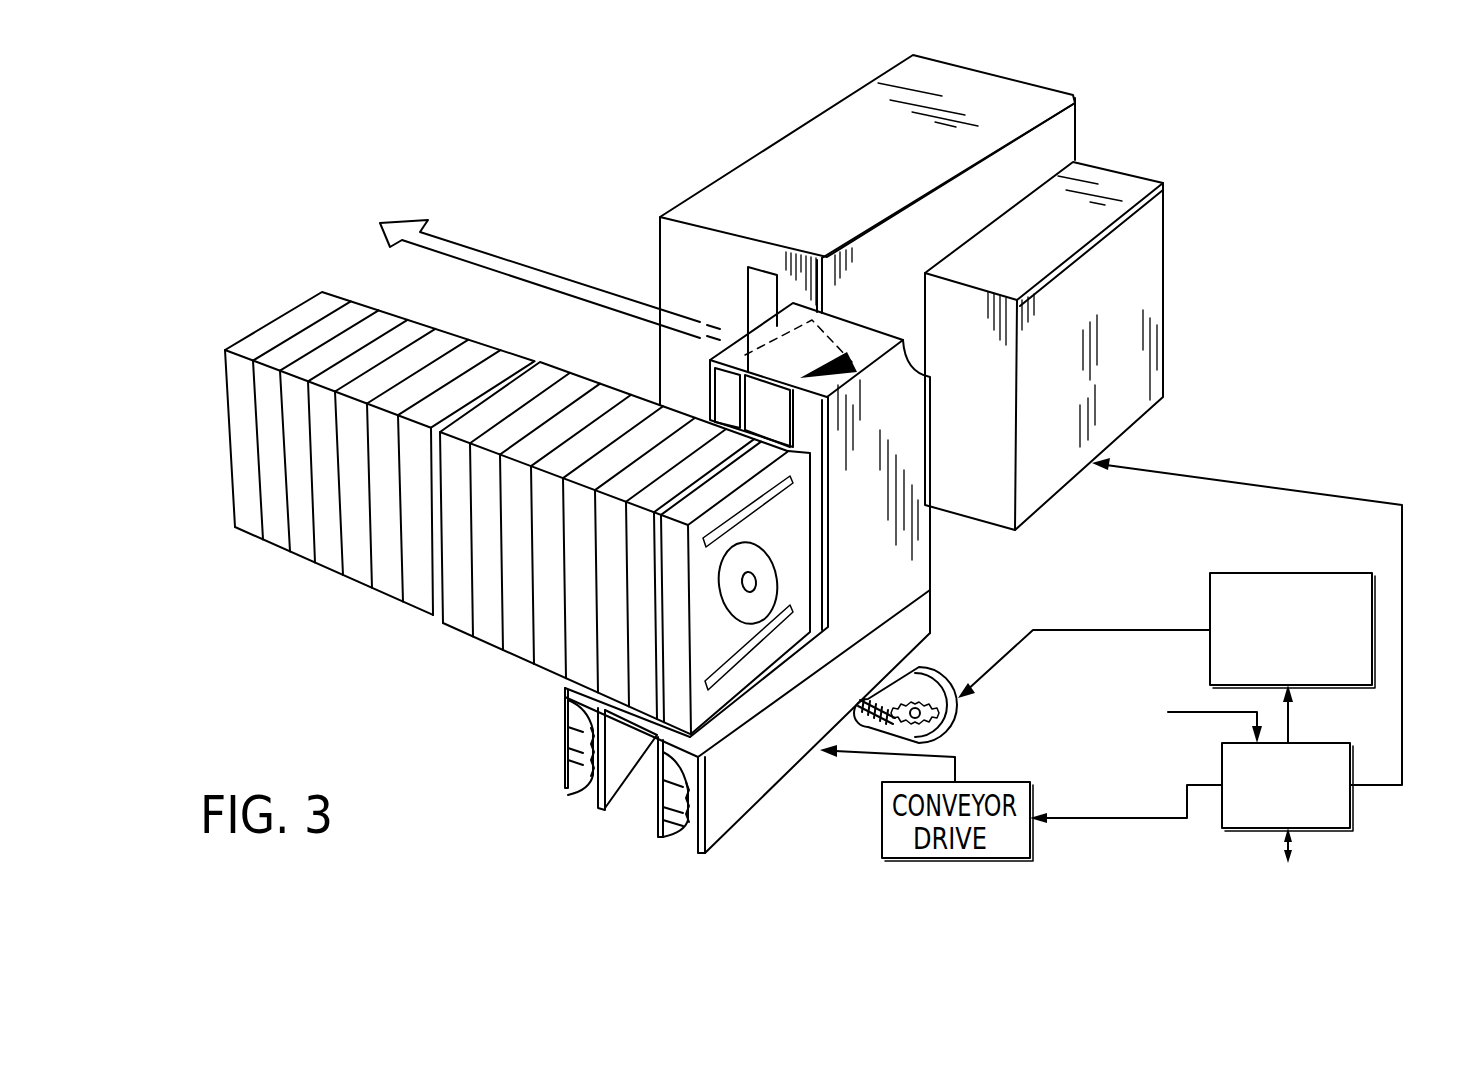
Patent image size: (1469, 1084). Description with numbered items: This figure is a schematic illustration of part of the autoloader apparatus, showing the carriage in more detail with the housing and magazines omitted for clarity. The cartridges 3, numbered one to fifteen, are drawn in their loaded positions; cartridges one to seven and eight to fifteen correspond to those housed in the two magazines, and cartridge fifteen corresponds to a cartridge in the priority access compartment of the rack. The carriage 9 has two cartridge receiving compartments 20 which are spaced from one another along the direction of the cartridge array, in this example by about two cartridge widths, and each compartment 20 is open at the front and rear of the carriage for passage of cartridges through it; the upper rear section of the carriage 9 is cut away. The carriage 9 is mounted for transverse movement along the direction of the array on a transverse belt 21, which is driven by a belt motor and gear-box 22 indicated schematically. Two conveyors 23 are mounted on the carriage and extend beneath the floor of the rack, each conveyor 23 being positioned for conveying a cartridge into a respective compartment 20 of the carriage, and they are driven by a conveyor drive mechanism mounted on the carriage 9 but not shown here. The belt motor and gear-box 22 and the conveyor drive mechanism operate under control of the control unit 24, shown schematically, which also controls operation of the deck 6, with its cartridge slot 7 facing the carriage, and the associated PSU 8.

The cartridges 3 is at (513, 643).
The deck 6 is at (825, 127).
The cassette slot 7 is at (767, 280).
The PSU 8 is at (1125, 183).
The carriage 9 is at (913, 563).
The cartridge receiving compartment 20 is at (808, 411).
The transverse belt 21 is at (927, 677).
The belt motor and gear-box 22 is at (1210, 593).
The conveyor 23 is at (690, 833).
The control unit 24 is at (1353, 810).